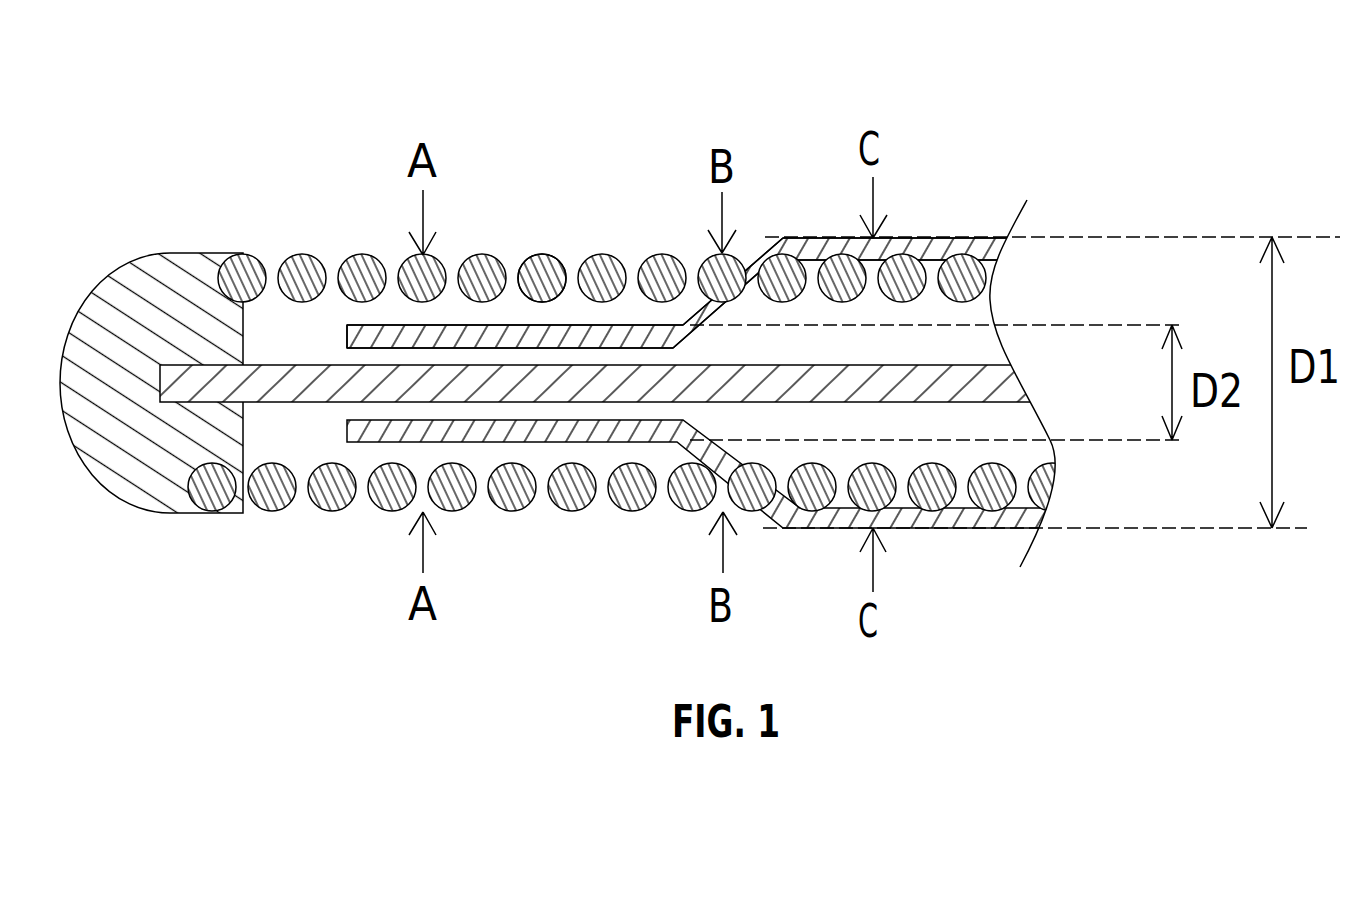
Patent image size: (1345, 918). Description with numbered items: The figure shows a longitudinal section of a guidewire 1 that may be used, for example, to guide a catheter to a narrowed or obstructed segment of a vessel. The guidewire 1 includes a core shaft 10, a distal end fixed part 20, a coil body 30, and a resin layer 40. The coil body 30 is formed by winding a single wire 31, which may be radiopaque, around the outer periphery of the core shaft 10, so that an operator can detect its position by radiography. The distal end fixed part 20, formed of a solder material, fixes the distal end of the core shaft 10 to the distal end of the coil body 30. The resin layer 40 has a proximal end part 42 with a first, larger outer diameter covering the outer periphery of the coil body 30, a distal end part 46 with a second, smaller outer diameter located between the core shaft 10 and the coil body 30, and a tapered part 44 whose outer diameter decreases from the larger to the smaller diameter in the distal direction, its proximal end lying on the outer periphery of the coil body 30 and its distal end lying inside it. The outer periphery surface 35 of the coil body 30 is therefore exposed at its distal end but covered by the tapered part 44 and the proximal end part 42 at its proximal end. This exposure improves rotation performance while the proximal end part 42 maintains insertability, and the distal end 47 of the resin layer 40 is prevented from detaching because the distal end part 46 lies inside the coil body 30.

The guidewire 1 is at (265, 152).
The core shaft 10 is at (1010, 388).
The distal end fixed part 20 is at (90, 323).
The coil body 30 is at (694, 382).
The single wire 31 is at (987, 283).
The outer periphery surface 35 is at (542, 253).
The resin layer 40 is at (691, 326).
The proximal end part 42 is at (807, 240).
The tapered part 44 is at (690, 262).
The distal end part 46 is at (497, 333).
The distal end 47 is at (345, 327).